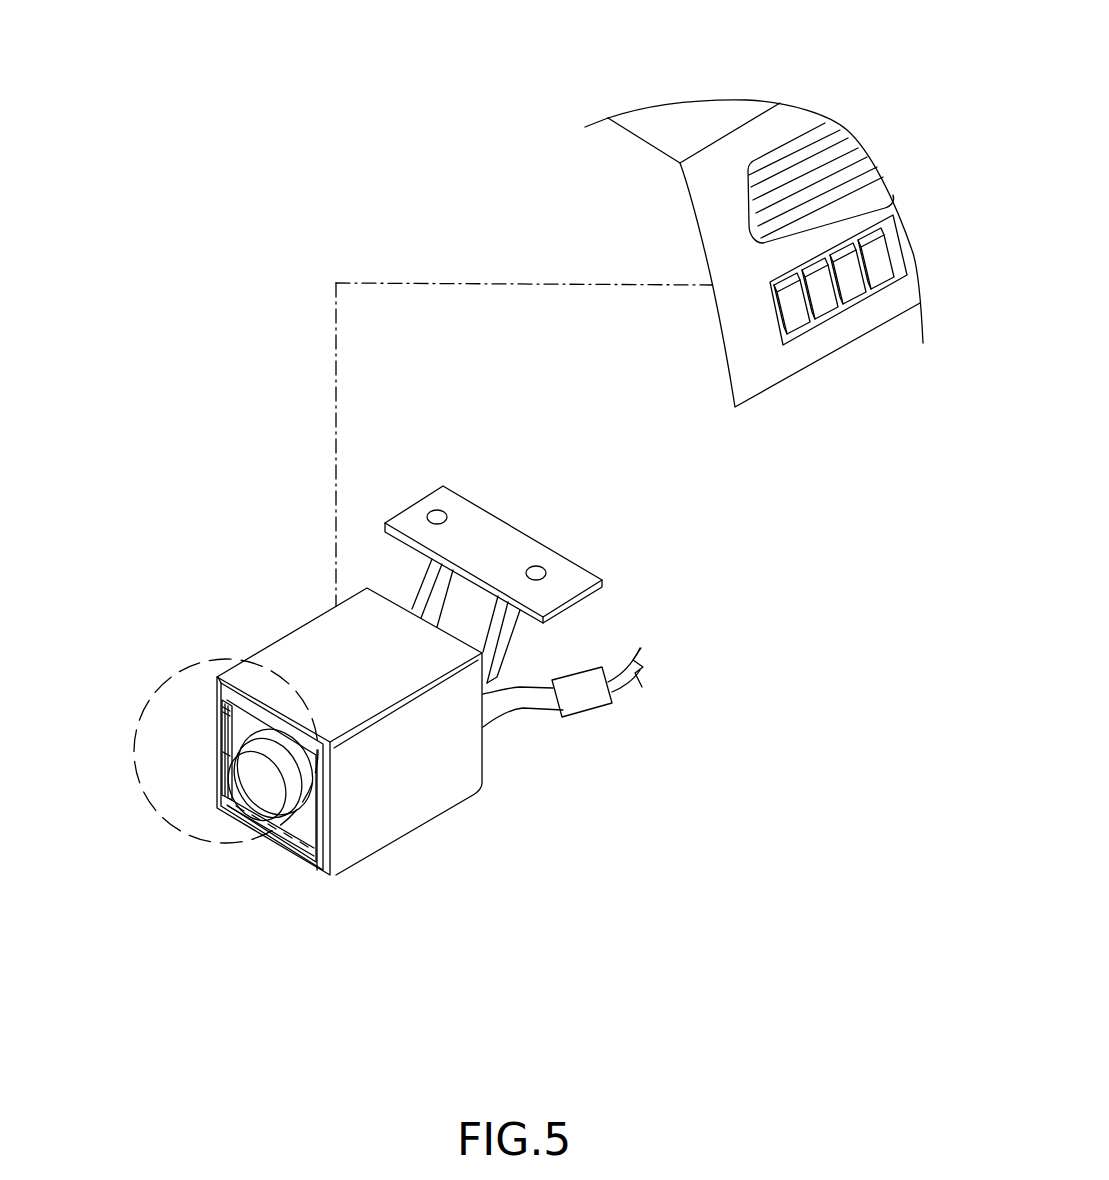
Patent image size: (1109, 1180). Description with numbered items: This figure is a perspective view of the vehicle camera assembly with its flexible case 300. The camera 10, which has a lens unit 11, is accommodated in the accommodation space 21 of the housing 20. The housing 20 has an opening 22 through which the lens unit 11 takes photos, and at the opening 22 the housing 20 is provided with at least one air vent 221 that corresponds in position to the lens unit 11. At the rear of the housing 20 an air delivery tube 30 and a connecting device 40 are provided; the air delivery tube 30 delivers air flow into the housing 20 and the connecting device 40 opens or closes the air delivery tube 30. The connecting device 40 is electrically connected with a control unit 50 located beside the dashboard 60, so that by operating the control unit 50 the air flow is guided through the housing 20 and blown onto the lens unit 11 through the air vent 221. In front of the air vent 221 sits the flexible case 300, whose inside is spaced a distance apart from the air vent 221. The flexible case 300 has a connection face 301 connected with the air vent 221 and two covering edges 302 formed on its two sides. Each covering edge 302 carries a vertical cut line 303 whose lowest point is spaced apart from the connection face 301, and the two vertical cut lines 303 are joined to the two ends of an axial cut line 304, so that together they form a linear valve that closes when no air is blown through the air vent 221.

The camera 10 is at (287, 845).
The lens unit 11 is at (260, 802).
The housing 20 is at (448, 793).
The accommodation space 21 is at (317, 862).
The opening 22 is at (222, 773).
The air vent 221 is at (224, 725).
The air delivery tube 30 is at (522, 700).
The flexible case 300 is at (227, 735).
The connection face 301 is at (226, 708).
The covering edge 302 is at (220, 678).
The vertical cut line 303 is at (223, 710).
The axial cut line 304 is at (224, 755).
The connecting device 40 is at (597, 700).
The control unit 50 is at (888, 213).
The dashboard 60 is at (797, 117).